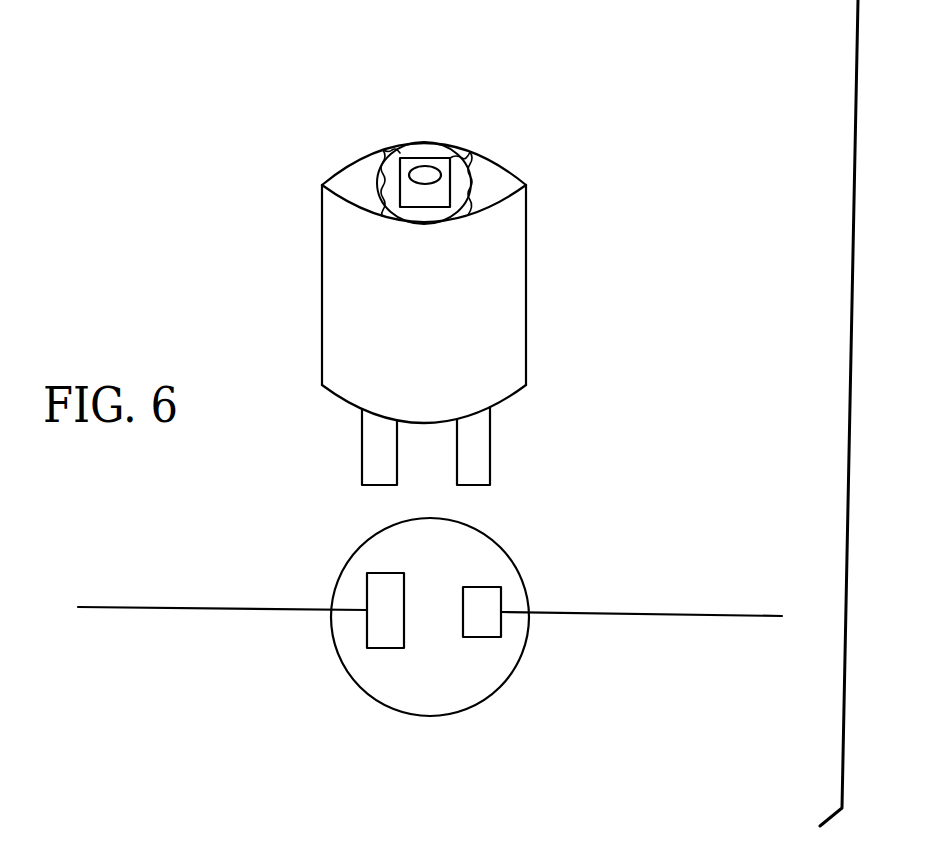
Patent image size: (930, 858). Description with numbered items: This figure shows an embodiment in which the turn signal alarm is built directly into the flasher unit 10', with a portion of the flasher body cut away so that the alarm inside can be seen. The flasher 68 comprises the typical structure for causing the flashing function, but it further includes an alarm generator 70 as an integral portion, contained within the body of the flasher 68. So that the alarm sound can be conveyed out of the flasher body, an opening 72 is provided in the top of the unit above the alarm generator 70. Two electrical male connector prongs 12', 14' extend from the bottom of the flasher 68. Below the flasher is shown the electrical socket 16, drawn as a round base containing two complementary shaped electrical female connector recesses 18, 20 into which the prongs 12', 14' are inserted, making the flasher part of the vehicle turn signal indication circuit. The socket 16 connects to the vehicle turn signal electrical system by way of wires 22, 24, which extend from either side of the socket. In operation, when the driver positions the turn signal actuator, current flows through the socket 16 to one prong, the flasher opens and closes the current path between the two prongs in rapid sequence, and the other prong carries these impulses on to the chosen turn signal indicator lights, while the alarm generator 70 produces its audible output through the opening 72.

The turn signal flasher 10' is at (272, 291).
The electrical male connector prong 12' is at (526, 446).
The electrical male connector prong 14' is at (327, 447).
The electrical socket 16 is at (514, 596).
The electrical female connector recess 18 is at (383, 645).
The electrical female connector recess 20 is at (481, 628).
The wire 22 is at (303, 607).
The wire 24 is at (645, 617).
The flasher 68 is at (517, 303).
The alarm generator 70 is at (452, 207).
The opening 72 is at (443, 172).